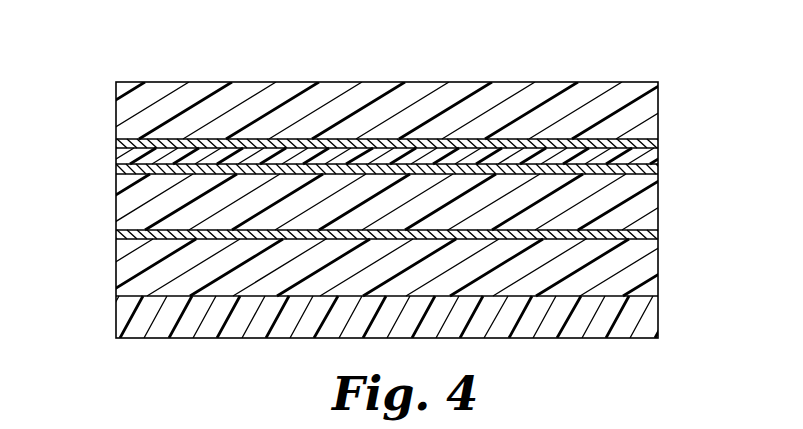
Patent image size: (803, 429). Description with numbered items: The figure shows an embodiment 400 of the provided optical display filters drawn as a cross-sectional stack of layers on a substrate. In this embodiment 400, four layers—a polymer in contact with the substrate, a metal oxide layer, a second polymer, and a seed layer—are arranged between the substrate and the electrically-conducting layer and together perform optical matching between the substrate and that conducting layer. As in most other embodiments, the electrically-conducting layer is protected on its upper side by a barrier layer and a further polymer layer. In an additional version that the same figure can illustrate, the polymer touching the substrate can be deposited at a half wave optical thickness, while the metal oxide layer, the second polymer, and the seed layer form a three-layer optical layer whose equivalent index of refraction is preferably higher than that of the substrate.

The embodiment of optical filter 400 is at (630, 55).